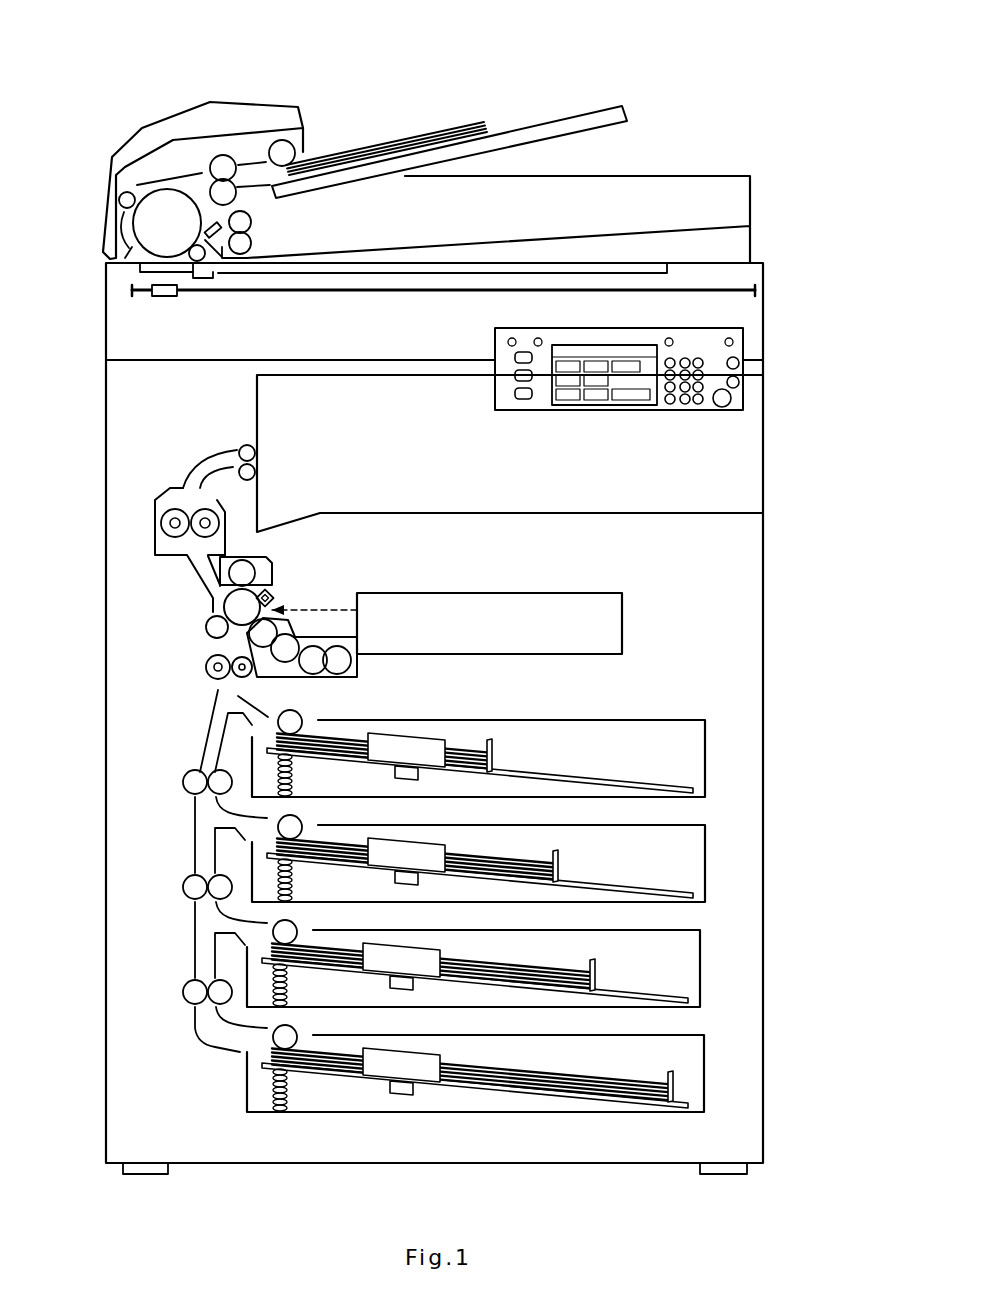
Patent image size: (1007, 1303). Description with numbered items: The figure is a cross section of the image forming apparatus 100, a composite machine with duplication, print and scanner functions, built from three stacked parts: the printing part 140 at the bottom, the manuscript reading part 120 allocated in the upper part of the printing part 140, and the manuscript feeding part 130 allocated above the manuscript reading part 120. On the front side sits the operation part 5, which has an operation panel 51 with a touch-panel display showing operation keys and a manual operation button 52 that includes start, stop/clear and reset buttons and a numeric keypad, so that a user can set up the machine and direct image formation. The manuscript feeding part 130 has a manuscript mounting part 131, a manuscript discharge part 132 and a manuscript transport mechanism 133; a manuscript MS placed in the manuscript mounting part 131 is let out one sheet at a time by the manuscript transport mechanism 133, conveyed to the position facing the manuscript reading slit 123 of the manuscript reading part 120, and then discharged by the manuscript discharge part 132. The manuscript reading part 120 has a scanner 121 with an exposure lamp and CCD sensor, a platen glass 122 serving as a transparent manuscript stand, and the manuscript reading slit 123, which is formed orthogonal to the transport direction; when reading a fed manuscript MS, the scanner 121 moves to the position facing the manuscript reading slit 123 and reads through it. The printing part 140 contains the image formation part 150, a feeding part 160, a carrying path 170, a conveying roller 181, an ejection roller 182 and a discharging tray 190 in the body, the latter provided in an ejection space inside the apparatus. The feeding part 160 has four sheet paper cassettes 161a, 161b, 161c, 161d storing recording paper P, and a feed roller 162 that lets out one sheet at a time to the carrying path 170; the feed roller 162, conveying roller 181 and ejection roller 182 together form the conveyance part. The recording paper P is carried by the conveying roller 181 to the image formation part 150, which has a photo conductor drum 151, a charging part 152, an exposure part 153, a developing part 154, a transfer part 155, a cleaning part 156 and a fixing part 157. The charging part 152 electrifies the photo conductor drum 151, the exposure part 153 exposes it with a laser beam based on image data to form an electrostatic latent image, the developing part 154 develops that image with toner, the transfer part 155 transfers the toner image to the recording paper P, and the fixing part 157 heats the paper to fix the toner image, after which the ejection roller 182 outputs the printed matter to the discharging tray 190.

The image forming apparatus 100 is at (105, 83).
The manuscript reading part 120 is at (768, 302).
The scanner 121 is at (167, 302).
The platen glass 122 is at (592, 270).
The manuscript reading slit 123 is at (173, 270).
The manuscript feeding part 130 is at (325, 110).
The manuscript mounting part 131 is at (593, 112).
The manuscript discharge part 132 is at (512, 240).
The manuscript transport mechanism 133 is at (233, 102).
The manuscript MS is at (443, 132).
The operation part 5 is at (745, 354).
The operation panel 51 is at (645, 400).
The manual operation button 52 is at (663, 405).
The printing part 140 is at (766, 584).
The image formation part 150 is at (353, 573).
The photo conductor drum 151 is at (227, 602).
The charging part 152 is at (274, 590).
The exposure part 153 is at (582, 633).
The developing part 154 is at (350, 667).
The transfer part 155 is at (208, 627).
The cleaning part 156 is at (263, 563).
The fixing part 157 is at (225, 518).
The feeding part 160 is at (735, 733).
The sheet paper cassette 161a is at (705, 762).
The sheet paper cassette 161b is at (705, 866).
The sheet paper cassette 161c is at (700, 970).
The sheet paper cassette 161d is at (704, 1073).
The feed roller 162 is at (300, 717).
The carrying path 170 is at (197, 709).
The conveying roller 181 is at (207, 667).
The ejection roller 182 is at (247, 453).
The discharging tray in the body 190 is at (478, 508).
The recording paper P is at (458, 745).